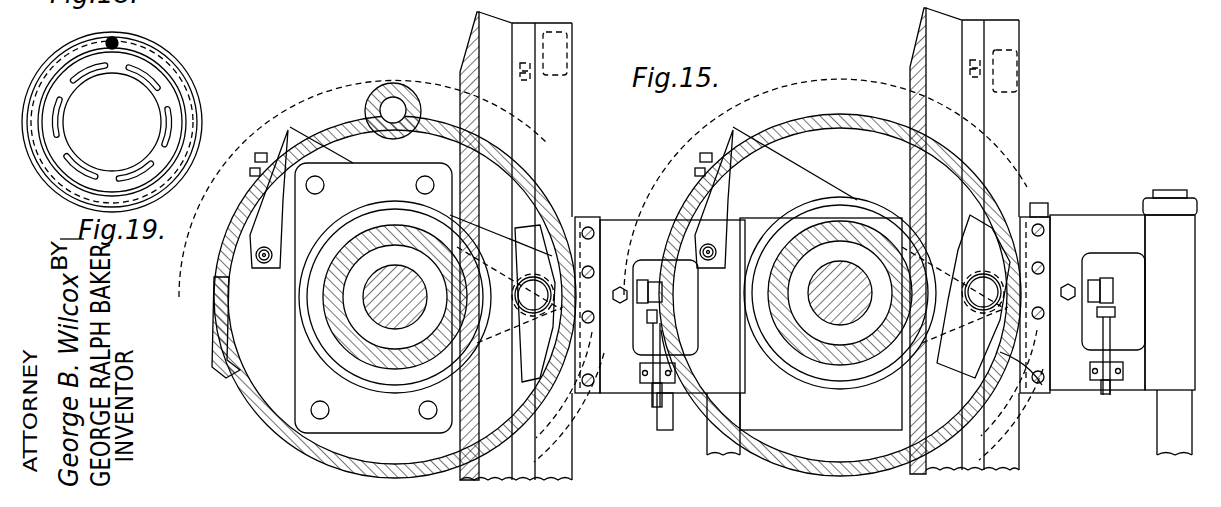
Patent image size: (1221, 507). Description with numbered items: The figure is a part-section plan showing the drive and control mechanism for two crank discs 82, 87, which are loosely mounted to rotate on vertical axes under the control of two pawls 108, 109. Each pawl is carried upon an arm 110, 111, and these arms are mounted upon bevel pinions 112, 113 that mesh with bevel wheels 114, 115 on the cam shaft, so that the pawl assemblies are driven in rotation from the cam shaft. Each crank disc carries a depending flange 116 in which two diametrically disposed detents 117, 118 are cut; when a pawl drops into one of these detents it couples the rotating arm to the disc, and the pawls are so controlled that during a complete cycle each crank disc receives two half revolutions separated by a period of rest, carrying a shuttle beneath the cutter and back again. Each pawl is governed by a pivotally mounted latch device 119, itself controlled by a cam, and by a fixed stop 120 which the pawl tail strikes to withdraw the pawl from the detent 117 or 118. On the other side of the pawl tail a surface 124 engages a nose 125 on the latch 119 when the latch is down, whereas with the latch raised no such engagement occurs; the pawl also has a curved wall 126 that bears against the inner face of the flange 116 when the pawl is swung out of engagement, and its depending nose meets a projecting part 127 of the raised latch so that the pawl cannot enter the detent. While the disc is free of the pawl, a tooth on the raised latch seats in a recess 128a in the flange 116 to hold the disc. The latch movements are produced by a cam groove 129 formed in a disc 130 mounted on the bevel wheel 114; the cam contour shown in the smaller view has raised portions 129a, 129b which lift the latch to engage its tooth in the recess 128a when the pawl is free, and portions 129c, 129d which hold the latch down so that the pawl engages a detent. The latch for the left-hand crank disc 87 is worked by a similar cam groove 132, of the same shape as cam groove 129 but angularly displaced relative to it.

In FIG. 15, the crank disc 82 is at (828, 78).
In FIG. 15, the crank disc 87 is at (366, 84).
In FIG. 15, the pawl 108 is at (987, 240).
In FIG. 15, the pawl 109 is at (525, 343).
In FIG. 15, the arm 110 is at (940, 262).
In FIG. 15, the arm 111 is at (492, 255).
In FIG. 15, the bevel pinion 112 is at (872, 202).
In FIG. 15, the bevel pinion 113 is at (363, 212).
In FIG. 15, the bevel wheel 114 is at (908, 65).
In FIG. 15, the bevel wheel 115 is at (467, 65).
In FIG. 15, the depending flange 116 is at (348, 135).
In FIG. 15, the detent 117 is at (580, 215).
In FIG. 15, the detent 118 is at (228, 363).
In FIG. 15, the latch device 119 is at (1040, 345).
In FIG. 15, the fixed stop 120 is at (263, 264).
In FIG. 15, the surface 124 is at (1020, 375).
In FIG. 15, the nose 125 is at (567, 422).
In FIG. 15, the curved wall 126 is at (973, 373).
In FIG. 15, the projecting part 127 is at (1042, 205).
In FIG. 15, the recess 128a is at (573, 213).
In FIG. 19, the cam groove 129 is at (157, 53).
In FIG. 15, the cam groove 129 is at (1020, 84).
In FIG. 19, the cam portion 129a is at (23, 143).
In FIG. 19, the cam portion 129b is at (195, 87).
In FIG. 19, the cam portion 129c is at (57, 57).
In FIG. 19, the cam portion 129d is at (78, 195).
In FIG. 19, the disc 130 is at (185, 67).
In FIG. 15, the disc 130 is at (1014, 122).
In FIG. 19, the cam groove 132 is at (195, 110).
In FIG. 15, the cam groove 132 is at (570, 60).